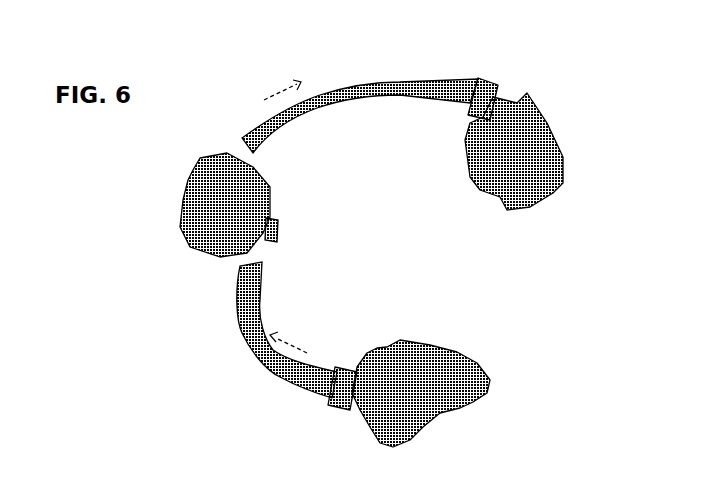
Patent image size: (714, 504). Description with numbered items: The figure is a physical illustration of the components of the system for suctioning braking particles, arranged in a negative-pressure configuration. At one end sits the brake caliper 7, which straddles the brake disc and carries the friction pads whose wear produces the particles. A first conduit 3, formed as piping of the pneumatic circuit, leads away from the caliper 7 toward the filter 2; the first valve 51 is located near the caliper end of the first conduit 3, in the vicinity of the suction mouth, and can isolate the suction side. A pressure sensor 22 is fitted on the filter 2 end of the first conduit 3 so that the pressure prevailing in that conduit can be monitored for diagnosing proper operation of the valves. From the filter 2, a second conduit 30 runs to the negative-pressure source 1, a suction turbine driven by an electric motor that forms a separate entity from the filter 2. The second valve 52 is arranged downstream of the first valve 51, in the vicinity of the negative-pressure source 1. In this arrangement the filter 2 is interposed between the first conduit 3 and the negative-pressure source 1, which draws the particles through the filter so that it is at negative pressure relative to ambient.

The negative-pressure source 1 is at (561, 134).
The filter 2 is at (187, 193).
The first conduit 3 is at (240, 335).
The caliper 7 is at (471, 344).
The pressure sensor 22 is at (278, 226).
The second conduit 30 is at (377, 80).
The first valve 51 is at (340, 362).
The second valve 52 is at (486, 80).